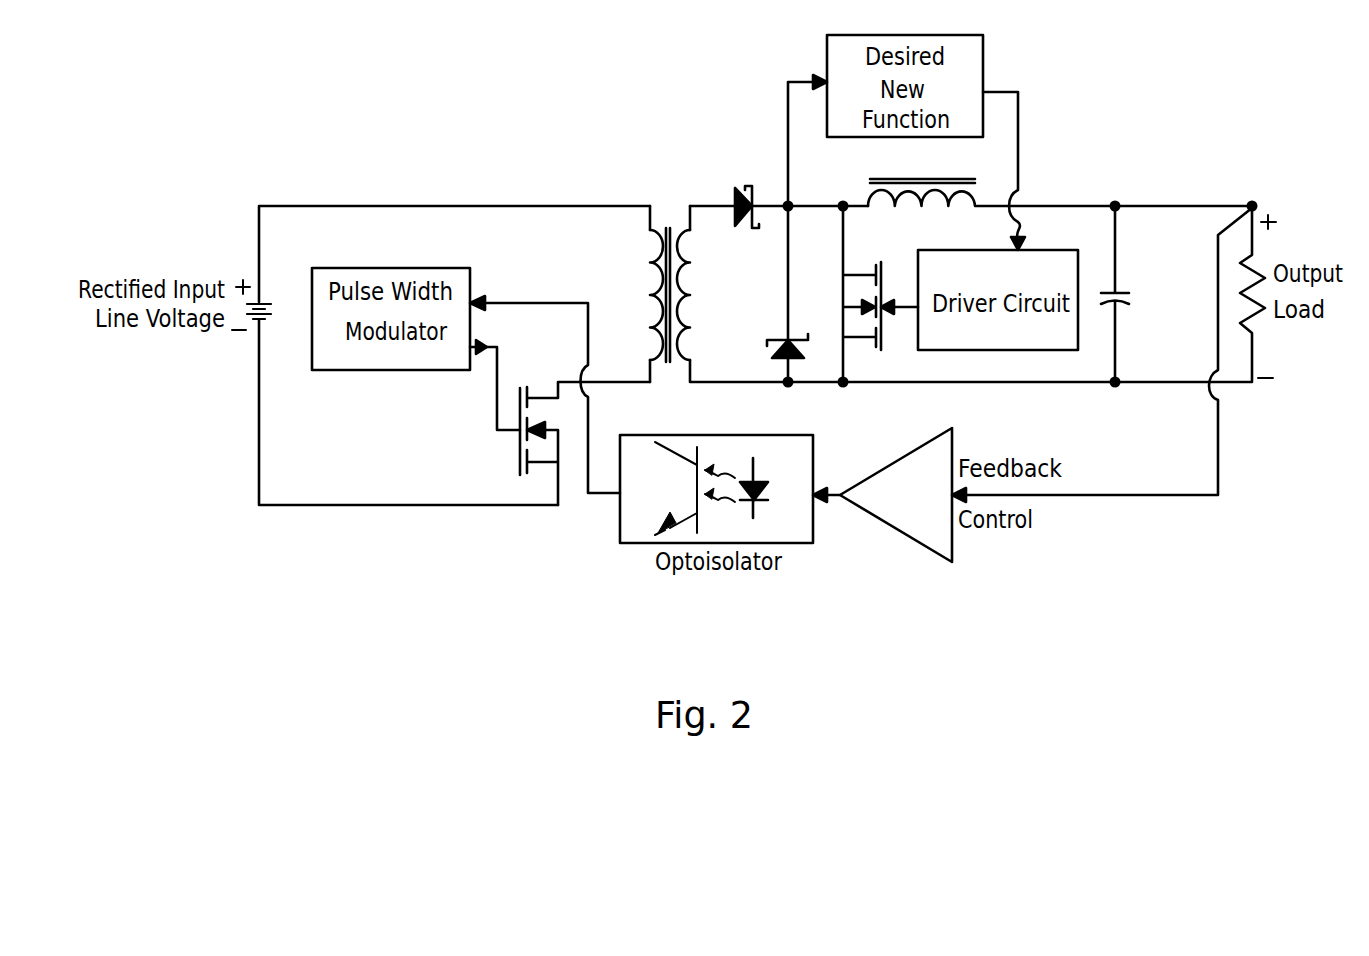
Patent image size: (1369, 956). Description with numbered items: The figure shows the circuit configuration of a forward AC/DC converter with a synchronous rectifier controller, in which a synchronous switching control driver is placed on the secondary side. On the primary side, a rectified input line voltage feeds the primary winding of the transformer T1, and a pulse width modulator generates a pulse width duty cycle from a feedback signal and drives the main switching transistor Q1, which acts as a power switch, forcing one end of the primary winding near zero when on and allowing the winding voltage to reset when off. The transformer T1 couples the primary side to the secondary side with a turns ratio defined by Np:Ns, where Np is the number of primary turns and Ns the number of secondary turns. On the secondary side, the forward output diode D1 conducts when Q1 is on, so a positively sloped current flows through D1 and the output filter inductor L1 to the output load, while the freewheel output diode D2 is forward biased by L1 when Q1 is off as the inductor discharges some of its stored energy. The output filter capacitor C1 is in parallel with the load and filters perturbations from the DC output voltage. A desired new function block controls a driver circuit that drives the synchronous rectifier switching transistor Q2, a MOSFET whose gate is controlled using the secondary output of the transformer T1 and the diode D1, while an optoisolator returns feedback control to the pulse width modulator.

The transformer T1 is at (951, 278).
The primary winding Np is at (636, 295).
The secondary winding Ns is at (703, 295).
The forward output diode D1 is at (779, 190).
The freewheel output diode D2 is at (794, 342).
The output filter inductor L1 is at (1060, 177).
The main switching transistor Q1 is at (564, 443).
The synchronous rectifier switching transistor Q2 is at (880, 294).
The output filter capacitor C1 is at (1126, 294).